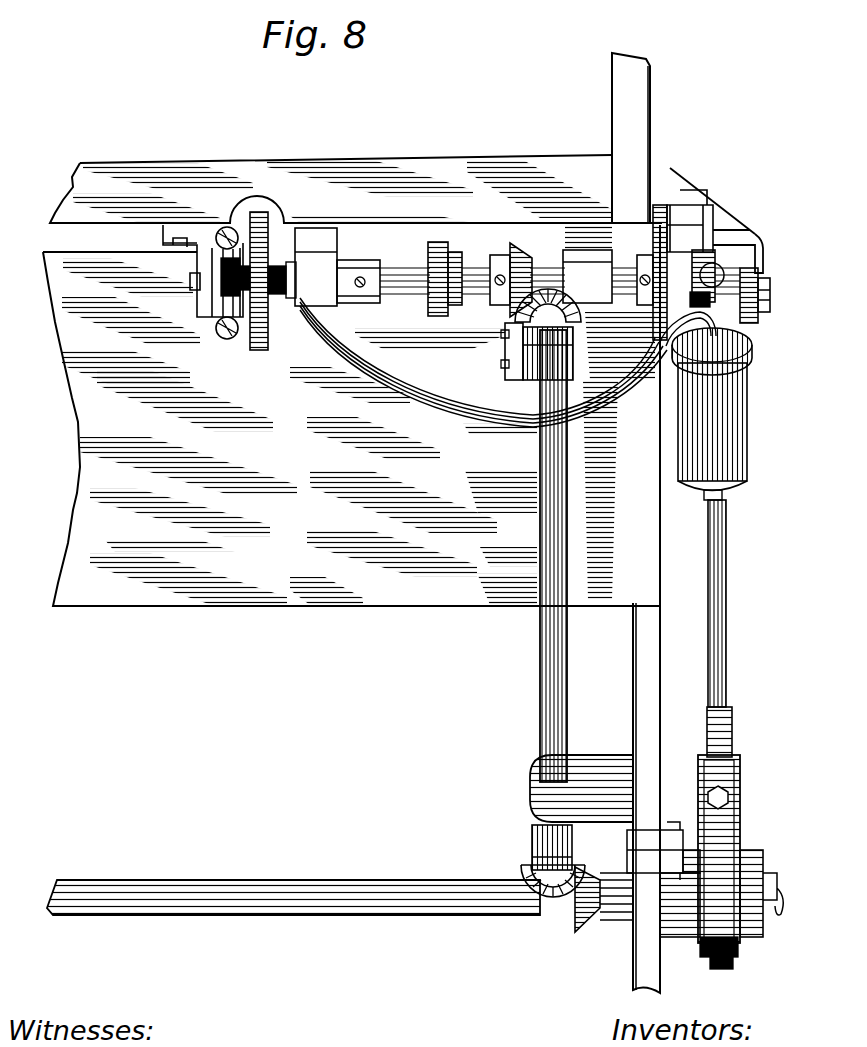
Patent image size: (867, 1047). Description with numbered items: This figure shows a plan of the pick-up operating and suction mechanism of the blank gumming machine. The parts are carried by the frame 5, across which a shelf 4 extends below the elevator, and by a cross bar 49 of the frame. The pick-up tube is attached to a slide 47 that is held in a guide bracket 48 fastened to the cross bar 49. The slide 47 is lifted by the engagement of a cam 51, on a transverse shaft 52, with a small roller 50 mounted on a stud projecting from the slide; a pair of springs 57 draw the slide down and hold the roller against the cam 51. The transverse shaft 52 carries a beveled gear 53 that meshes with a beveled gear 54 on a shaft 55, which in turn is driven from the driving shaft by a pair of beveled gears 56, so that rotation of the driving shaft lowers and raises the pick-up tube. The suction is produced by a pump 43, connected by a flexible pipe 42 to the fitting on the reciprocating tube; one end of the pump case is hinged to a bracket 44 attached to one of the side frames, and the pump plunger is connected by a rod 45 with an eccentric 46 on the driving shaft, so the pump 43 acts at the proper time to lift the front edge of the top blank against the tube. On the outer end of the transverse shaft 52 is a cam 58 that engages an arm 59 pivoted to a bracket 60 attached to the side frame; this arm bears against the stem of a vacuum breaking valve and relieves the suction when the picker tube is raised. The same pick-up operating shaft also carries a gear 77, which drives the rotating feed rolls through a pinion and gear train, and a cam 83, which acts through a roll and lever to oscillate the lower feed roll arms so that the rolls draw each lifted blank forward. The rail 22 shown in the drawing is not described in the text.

The shelf 4 is at (351, 415).
The frame 5 is at (660, 688).
The rail 22 is at (366, 873).
The flexible pipe 42 is at (426, 391).
The pump 43 is at (690, 437).
The bracket 44 is at (702, 186).
The rod 45 is at (763, 627).
The eccentric 46 is at (738, 812).
The slide 47 is at (222, 282).
The guide bracket 48 is at (212, 318).
The cross bar 49 is at (356, 189).
The small roller 50 is at (272, 298).
The cam 51 is at (266, 340).
The transverse shaft 52 is at (394, 266).
The beveled gear 53 is at (526, 266).
The beveled gear 54 is at (515, 336).
The shaft 55 is at (537, 653).
The pair of beveled gears 56 is at (557, 914).
The springs 57 is at (216, 228).
The cam 58 is at (714, 259).
The arm 59 is at (720, 232).
The bracket 60 is at (705, 198).
The gear 77 is at (660, 210).
The cam 83 is at (456, 240).